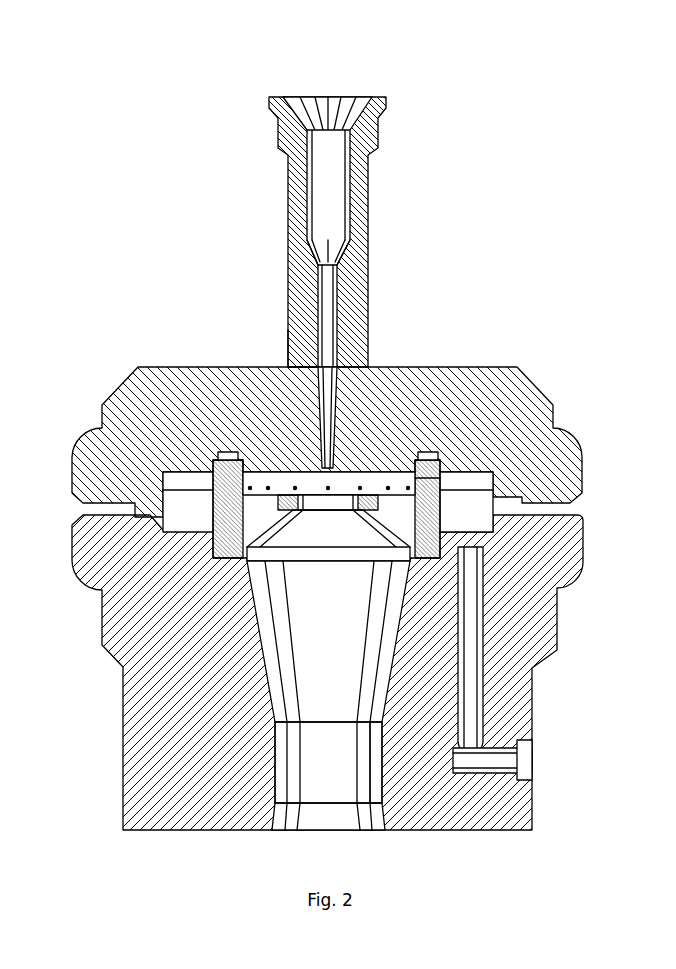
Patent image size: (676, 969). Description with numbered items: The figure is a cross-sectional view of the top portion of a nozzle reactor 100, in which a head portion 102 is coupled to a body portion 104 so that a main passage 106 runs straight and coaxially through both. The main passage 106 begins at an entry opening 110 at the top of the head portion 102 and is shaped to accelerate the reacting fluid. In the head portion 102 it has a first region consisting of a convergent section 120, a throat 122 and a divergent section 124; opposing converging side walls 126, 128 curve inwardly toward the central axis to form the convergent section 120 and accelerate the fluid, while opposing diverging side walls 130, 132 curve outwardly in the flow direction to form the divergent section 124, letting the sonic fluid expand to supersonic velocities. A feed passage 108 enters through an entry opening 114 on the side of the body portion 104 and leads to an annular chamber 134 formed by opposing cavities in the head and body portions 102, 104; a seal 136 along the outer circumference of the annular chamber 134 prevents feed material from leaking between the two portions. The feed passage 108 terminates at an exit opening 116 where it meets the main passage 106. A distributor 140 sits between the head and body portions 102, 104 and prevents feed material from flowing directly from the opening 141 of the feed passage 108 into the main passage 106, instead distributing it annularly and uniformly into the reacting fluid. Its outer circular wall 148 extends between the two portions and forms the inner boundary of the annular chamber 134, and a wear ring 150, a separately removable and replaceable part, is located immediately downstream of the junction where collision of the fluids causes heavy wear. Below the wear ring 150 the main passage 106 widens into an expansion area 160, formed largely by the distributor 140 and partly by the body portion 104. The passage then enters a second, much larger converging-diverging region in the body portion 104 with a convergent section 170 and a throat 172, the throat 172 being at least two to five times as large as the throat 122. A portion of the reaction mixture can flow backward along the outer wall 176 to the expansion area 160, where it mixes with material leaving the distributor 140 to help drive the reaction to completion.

The nozzle reactor 100 is at (551, 203).
The head portion 102 is at (527, 385).
The body portion 104 is at (123, 690).
The main passage 106 is at (340, 387).
The feed passage 108 is at (480, 658).
The entry opening 110 is at (322, 97).
The entry opening 114 is at (527, 762).
The exit opening 116 is at (380, 477).
The convergent section 120 is at (340, 254).
The throat 122 is at (341, 300).
The divergent section 124 is at (290, 362).
The converging side wall 126 is at (305, 246).
The converging side wall 128 is at (352, 241).
The diverging side wall 130 is at (296, 368).
The diverging side wall 132 is at (386, 468).
The annular chamber 134 is at (485, 477).
The seal 136 is at (177, 498).
The distributor 140 is at (213, 557).
The opening 141 is at (487, 543).
The outer circular wall 148 is at (438, 468).
The wear ring 150 is at (443, 495).
The expansion area 160 is at (260, 557).
The convergent section 170 is at (280, 703).
The throat 172 is at (285, 745).
The outer wall 176 is at (373, 772).